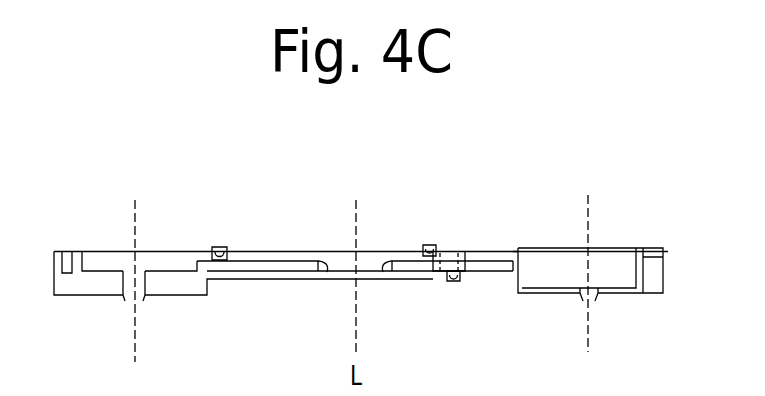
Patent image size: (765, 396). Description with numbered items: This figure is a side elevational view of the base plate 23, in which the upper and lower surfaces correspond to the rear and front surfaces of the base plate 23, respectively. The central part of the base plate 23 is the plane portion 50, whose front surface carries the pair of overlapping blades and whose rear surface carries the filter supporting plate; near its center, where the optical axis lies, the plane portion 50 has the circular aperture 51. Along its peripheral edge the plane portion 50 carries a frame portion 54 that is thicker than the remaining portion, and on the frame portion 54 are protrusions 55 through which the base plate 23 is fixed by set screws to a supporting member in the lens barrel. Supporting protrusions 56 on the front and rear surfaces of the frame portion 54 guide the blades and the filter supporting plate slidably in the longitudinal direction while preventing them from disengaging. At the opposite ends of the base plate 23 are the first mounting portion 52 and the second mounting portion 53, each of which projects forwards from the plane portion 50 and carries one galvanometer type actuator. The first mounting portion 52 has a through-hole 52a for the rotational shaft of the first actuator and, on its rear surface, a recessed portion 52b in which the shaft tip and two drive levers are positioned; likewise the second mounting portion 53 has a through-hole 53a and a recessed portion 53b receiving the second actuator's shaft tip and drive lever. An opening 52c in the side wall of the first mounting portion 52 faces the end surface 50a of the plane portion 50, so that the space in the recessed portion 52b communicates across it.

The base plate 23 is at (311, 228).
The plane portion 50 is at (255, 268).
The end surface 50a is at (522, 251).
The circular aperture 51 is at (327, 272).
The first mounting portion 52 is at (535, 294).
The through-hole 52a is at (583, 301).
The recessed portion 52b is at (626, 248).
The opening 52c is at (527, 280).
The second mounting portion 53 is at (183, 296).
The through-hole 53a is at (125, 301).
The recessed portion 53b is at (108, 271).
The frame portion 54 is at (278, 251).
The protrusion 55 is at (474, 251).
The supporting protrusion 56 is at (220, 247).